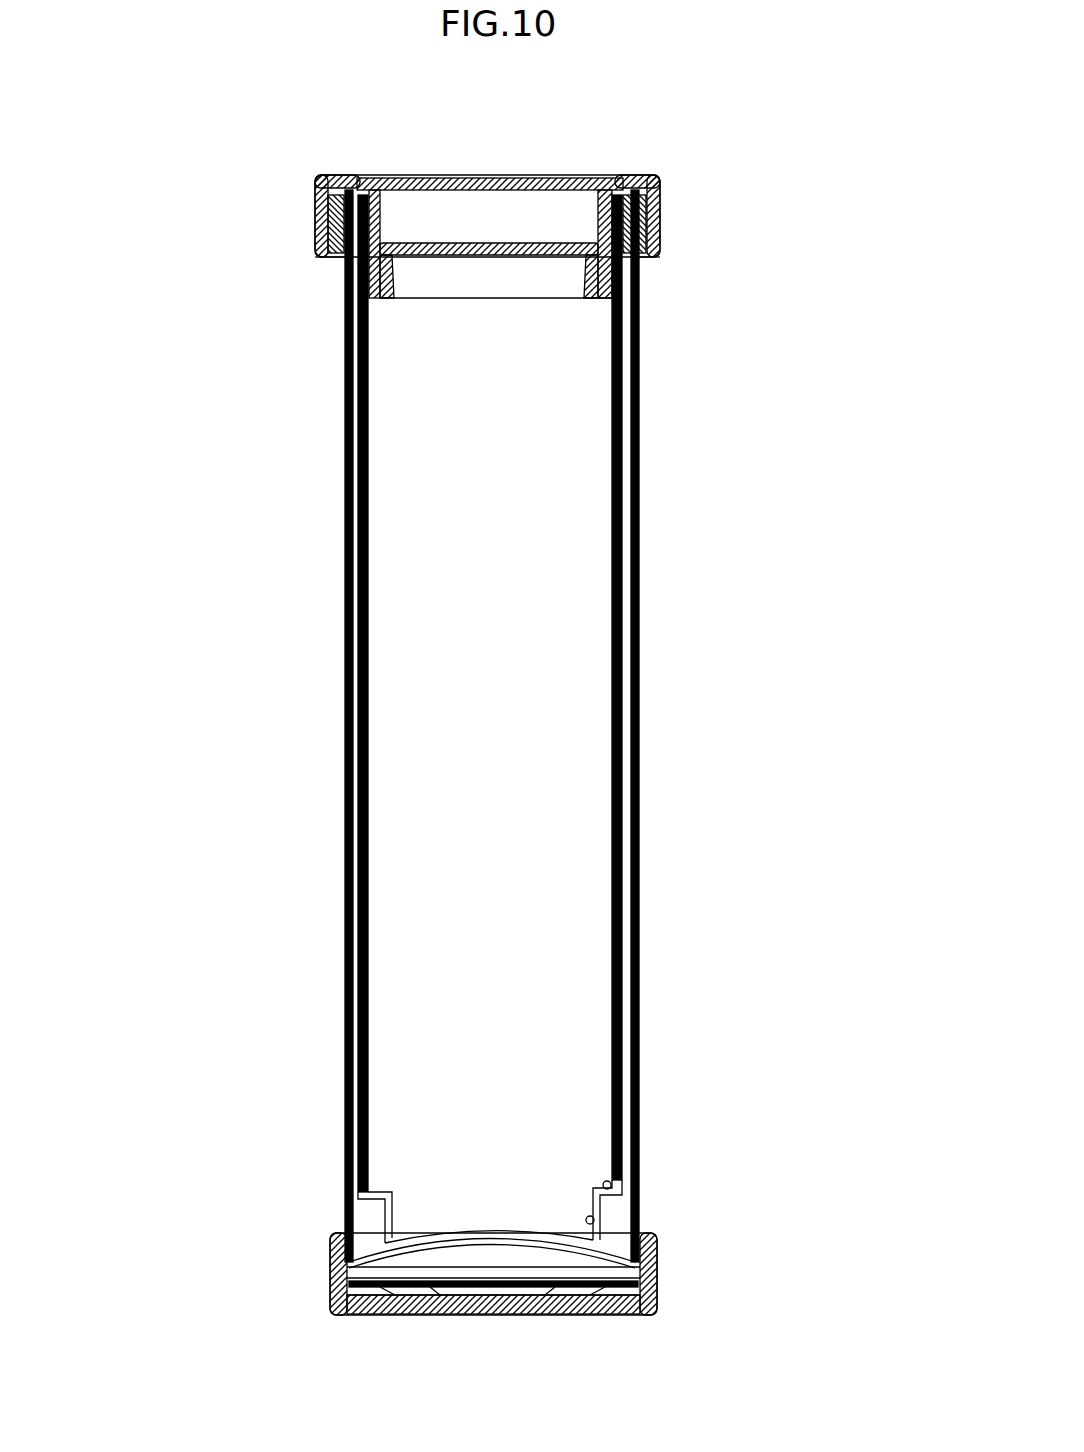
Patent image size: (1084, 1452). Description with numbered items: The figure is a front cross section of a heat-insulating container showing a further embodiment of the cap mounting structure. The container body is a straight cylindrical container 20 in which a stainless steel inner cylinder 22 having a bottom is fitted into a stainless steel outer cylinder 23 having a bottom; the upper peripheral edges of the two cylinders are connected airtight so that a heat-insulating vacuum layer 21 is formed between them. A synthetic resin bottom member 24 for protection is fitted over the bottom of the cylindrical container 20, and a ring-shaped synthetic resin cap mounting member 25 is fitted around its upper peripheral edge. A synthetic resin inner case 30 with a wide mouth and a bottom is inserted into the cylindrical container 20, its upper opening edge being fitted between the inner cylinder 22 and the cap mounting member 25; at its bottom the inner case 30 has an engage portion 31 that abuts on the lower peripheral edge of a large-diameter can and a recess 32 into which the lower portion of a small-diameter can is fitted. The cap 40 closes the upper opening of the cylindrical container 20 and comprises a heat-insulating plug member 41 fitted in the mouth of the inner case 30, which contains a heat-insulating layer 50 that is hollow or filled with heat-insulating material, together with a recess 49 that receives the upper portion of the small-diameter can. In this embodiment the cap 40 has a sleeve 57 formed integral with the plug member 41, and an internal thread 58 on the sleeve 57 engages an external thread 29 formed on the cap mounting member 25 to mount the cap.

The cylindrical container 20 is at (645, 602).
The heat-insulating vacuum layer 21 is at (628, 821).
The inner cylinder 22 is at (358, 851).
The outer cylinder 23 is at (345, 793).
The bottom member 24 is at (657, 1297).
The cap mounting member 25 is at (345, 182).
The external thread 29 is at (316, 223).
The inner case 30 is at (628, 879).
The engage portion 31 is at (608, 1172).
The recess 32 is at (592, 1223).
The cap 40 is at (563, 170).
The plug member 41 is at (481, 178).
The recess 49 is at (473, 285).
The heat-insulating layer 50 is at (415, 202).
The sleeve 57 is at (657, 216).
The internal thread 58 is at (655, 243).